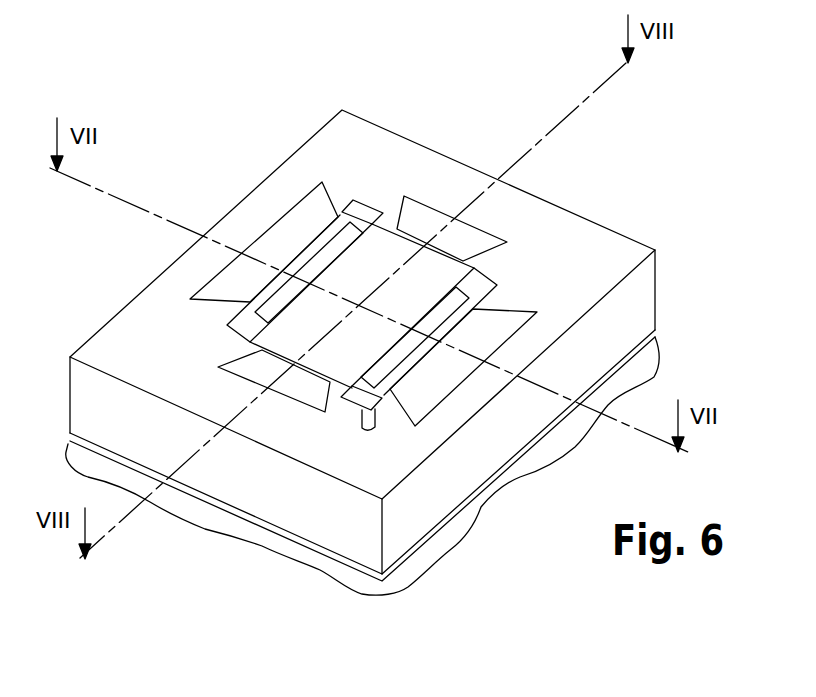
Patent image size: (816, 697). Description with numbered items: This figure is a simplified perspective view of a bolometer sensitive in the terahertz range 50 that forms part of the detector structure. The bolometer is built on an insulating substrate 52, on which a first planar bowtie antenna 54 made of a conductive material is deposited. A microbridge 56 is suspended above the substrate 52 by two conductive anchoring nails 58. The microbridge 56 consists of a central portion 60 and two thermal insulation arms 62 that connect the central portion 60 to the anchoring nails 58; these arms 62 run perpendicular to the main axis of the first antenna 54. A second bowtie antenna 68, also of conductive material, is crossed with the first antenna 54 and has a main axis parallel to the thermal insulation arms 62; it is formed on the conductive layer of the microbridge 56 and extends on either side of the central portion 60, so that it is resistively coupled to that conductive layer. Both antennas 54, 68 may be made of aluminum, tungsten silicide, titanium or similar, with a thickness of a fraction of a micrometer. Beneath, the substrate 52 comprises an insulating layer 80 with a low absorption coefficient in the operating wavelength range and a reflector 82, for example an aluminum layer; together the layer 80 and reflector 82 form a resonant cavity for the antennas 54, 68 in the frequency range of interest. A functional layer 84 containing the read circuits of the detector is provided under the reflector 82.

The bolometer sensitive in the terahertz range 50 is at (184, 145).
The insulating substrate 52 is at (674, 250).
The first planar bowtie antenna 54 is at (297, 223).
The microbridge 56 is at (218, 346).
The conductive anchoring nails 58 is at (360, 200).
The central portion 60 is at (477, 266).
The thermal insulation arms 62 is at (252, 316).
The second bowtie antenna 68 is at (442, 217).
The insulating layer 80 is at (348, 545).
The reflector 82 is at (385, 577).
The functional layer 84 is at (443, 547).